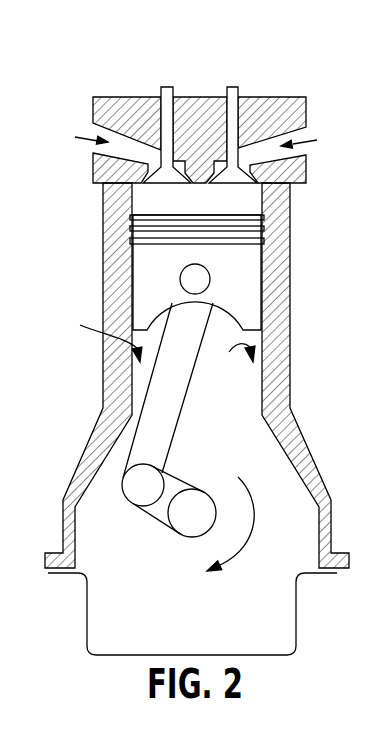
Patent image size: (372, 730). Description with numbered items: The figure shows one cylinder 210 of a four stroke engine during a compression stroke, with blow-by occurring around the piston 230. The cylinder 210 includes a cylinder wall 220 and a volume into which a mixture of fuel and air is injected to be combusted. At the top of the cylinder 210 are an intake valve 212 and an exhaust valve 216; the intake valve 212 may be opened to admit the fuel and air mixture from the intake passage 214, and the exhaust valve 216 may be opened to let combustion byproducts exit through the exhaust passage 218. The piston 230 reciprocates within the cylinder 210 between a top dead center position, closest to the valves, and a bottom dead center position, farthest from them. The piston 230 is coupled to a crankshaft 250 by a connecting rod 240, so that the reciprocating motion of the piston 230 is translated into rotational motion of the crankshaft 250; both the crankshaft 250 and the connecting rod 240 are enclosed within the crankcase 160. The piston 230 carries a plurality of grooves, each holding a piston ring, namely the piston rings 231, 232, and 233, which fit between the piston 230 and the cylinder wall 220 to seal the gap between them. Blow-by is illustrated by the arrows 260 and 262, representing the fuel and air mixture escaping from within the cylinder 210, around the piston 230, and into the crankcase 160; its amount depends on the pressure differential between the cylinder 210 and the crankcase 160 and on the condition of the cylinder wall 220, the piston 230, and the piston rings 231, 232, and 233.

The crankcase 160 is at (208, 619).
The cylinder 210 is at (215, 209).
The intake valve 212 is at (236, 87).
The intake passage 214 is at (314, 137).
The exhaust valve 216 is at (165, 87).
The exhaust passage 218 is at (73, 139).
The cylinder wall 220 is at (273, 273).
The piston 230 is at (173, 289).
The piston ring 231 is at (252, 216).
The piston ring 232 is at (252, 229).
The piston ring 233 is at (252, 241).
The connecting rod 240 is at (170, 411).
The crankshaft 250 is at (193, 521).
The arrow 260 is at (96, 333).
The arrow 262 is at (231, 358).